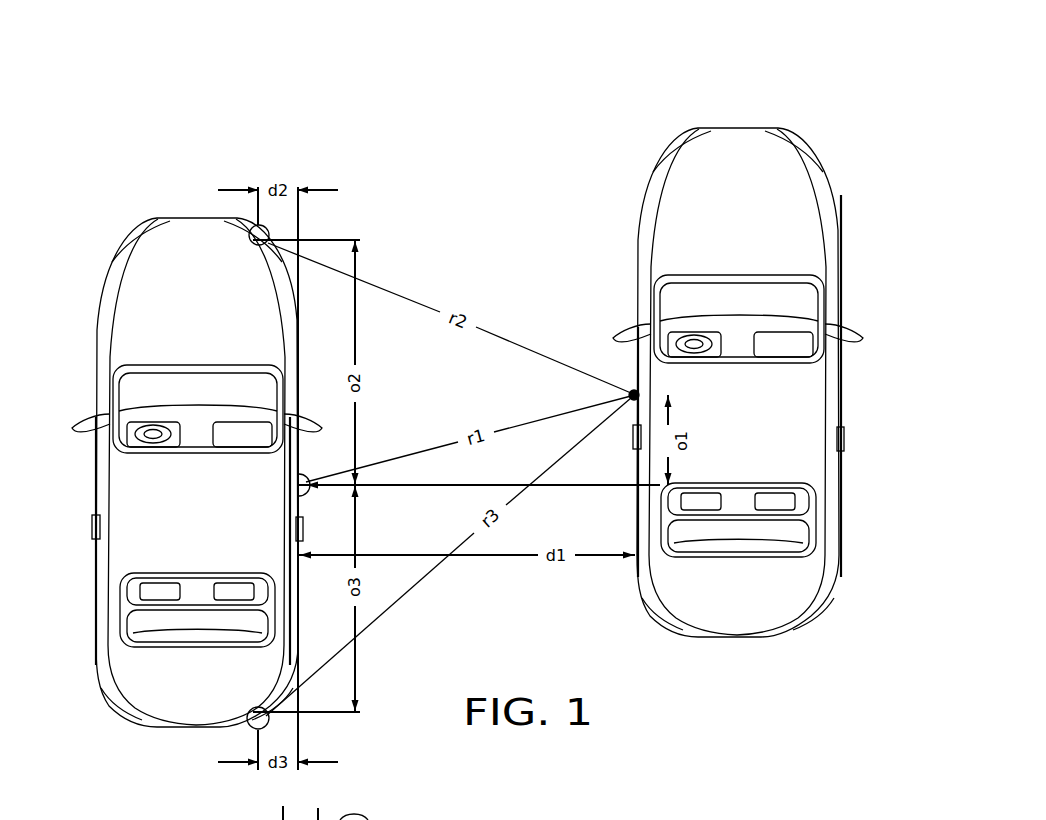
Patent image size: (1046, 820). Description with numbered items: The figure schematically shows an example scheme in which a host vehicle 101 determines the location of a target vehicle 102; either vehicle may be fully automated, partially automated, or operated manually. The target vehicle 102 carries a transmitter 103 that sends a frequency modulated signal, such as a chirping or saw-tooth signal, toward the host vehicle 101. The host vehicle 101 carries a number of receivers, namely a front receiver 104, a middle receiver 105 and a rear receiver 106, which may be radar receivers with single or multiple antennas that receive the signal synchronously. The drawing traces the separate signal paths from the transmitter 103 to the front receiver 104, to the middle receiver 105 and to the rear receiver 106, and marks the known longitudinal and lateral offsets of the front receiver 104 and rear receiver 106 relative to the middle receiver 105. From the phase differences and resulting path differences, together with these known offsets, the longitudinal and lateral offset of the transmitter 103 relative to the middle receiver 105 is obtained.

The host vehicle 101 is at (152, 214).
The target vehicle 102 is at (678, 125).
The transmitter 103 is at (626, 385).
The front receiver 104 is at (248, 228).
The middle receiver 105 is at (296, 490).
The rear receiver 106 is at (252, 727).